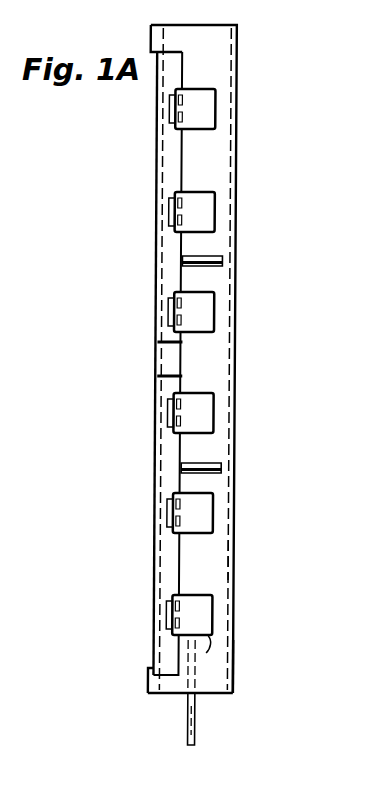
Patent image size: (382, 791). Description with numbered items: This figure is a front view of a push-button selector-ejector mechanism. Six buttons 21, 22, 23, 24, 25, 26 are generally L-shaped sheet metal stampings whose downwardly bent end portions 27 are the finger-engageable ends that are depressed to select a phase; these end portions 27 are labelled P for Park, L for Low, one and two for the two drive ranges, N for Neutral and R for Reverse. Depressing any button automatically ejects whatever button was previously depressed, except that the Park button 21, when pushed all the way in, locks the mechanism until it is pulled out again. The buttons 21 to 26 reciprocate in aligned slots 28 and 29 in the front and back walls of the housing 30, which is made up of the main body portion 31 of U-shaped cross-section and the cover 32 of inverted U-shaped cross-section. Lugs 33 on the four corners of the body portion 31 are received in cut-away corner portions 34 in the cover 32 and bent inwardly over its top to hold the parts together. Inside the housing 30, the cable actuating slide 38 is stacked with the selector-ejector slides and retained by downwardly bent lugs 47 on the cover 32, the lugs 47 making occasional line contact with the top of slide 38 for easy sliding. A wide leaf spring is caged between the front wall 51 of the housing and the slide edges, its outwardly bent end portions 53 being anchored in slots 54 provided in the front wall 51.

The Park button 21 is at (216, 619).
The Low button 22 is at (216, 516).
The Reverse button 23 is at (216, 412).
The Neutral button 24 is at (216, 313).
The Drive No. 1 button 25 is at (216, 214).
The Drive No. 2 button 26 is at (216, 109).
The downwardly bent end portion 27 is at (210, 655).
The slot 28 is at (180, 599).
The slot 29 is at (173, 642).
The housing 30 is at (237, 673).
The main body portion 31 is at (233, 560).
The cover 32 is at (158, 563).
The lug 33 is at (152, 695).
The cut-away corner portion 34 is at (155, 673).
The cable actuating slide 38 is at (196, 748).
The downwardly bent lug 47 is at (175, 363).
The front wall 51 is at (227, 367).
The outwardly bent end portion 53 is at (215, 257).
The slot 54 is at (225, 264).